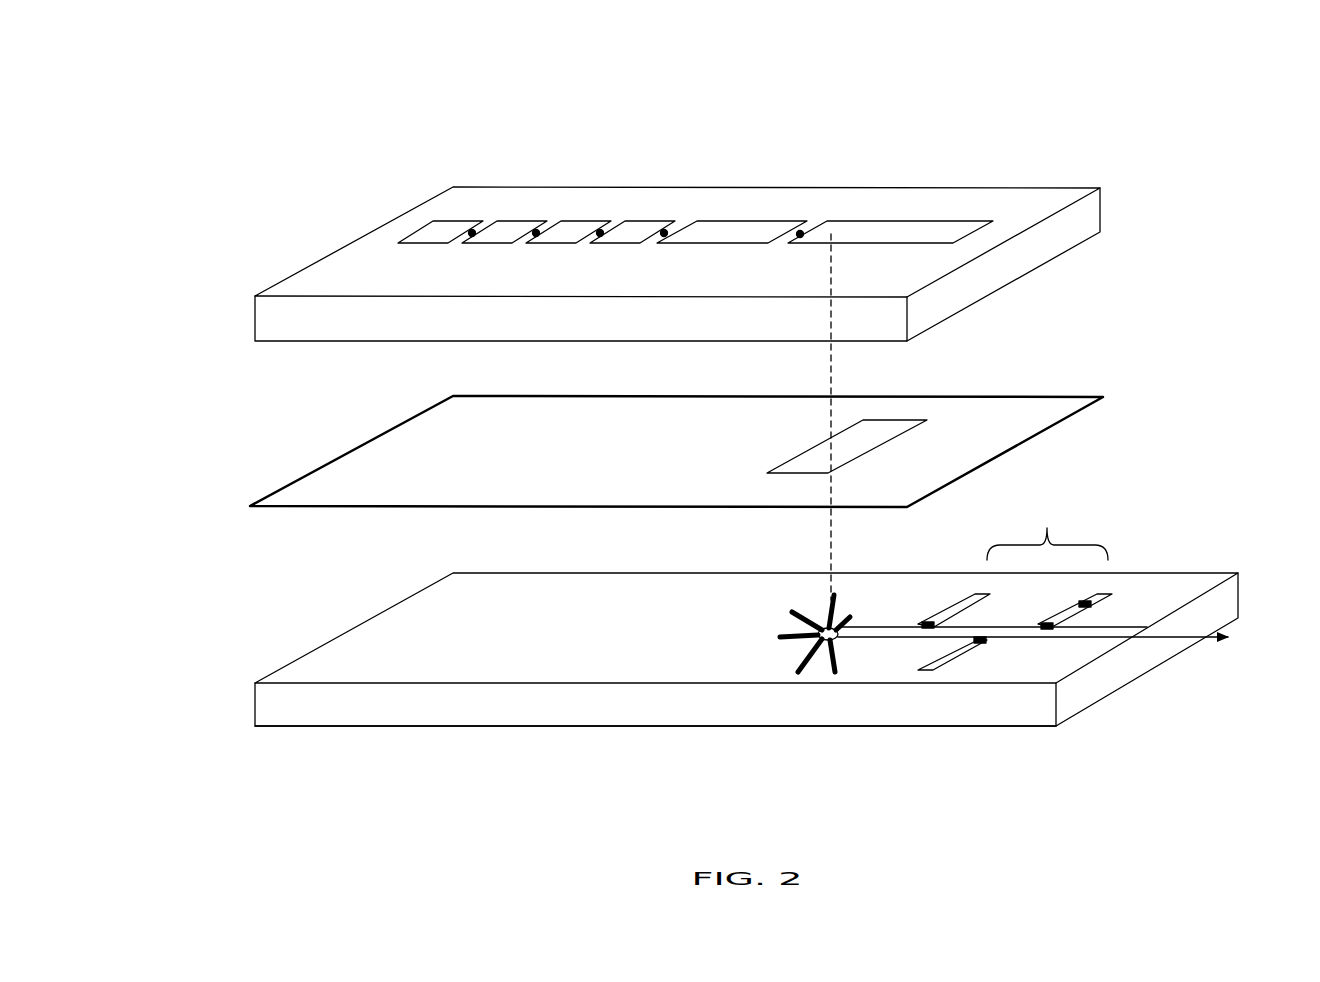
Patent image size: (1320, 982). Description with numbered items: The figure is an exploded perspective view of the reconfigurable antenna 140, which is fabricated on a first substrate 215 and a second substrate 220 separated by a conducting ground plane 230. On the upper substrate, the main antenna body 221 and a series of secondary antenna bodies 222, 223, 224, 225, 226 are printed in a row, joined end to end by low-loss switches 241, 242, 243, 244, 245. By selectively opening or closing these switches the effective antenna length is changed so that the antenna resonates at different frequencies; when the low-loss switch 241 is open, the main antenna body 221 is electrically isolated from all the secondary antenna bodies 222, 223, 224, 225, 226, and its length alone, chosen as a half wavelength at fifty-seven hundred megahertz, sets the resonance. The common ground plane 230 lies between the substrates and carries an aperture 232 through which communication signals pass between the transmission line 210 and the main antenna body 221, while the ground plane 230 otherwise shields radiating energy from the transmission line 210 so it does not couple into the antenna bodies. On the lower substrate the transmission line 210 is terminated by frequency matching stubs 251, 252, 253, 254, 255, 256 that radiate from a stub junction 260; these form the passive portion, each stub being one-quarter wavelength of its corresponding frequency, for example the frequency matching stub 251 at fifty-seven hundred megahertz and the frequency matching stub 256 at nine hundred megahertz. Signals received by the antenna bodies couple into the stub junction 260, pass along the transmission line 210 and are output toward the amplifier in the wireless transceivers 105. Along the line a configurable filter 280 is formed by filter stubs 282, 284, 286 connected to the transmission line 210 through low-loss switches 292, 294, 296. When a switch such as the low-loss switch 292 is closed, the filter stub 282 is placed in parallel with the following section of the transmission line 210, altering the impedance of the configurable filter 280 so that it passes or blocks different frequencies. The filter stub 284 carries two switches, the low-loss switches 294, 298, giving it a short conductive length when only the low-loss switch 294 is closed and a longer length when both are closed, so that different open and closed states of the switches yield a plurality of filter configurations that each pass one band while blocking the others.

The reconfigurable antenna 140 is at (1168, 123).
The wireless transceivers 105 is at (1060, 636).
The transmission line 210 is at (1128, 639).
The first substrate 215 is at (1080, 233).
The second substrate 220 is at (517, 713).
The main antenna body 221 is at (892, 233).
The secondary antenna body 222 is at (743, 233).
The secondary antenna body 223 is at (651, 238).
The secondary antenna body 224 is at (577, 232).
The secondary antenna body 225 is at (515, 232).
The secondary antenna body 226 is at (450, 232).
The ground plane 230 is at (1017, 415).
The aperture 232 is at (873, 430).
The low-loss switch 241 is at (798, 237).
The low-loss switch 242 is at (662, 236).
The low-loss switch 243 is at (598, 236).
The low-loss switch 244 is at (534, 236).
The low-loss switch 245 is at (470, 236).
The frequency matching stub 251 is at (854, 610).
The frequency matching stub 252 is at (843, 591).
The frequency matching stub 253 is at (791, 603).
The frequency matching stub 254 is at (835, 664).
The frequency matching stub 255 is at (806, 662).
The frequency matching stub 256 is at (773, 637).
The stub junction 260 is at (842, 644).
The configurable filter 280 is at (1047, 525).
The filter stub 282 is at (990, 596).
The filter stub 284 is at (1103, 597).
The filter stub 286 is at (945, 662).
The low-loss switch 292 is at (938, 623).
The low-loss switch 294 is at (1057, 626).
The low-loss switch 296 is at (987, 642).
The low-loss switch 298 is at (1093, 601).